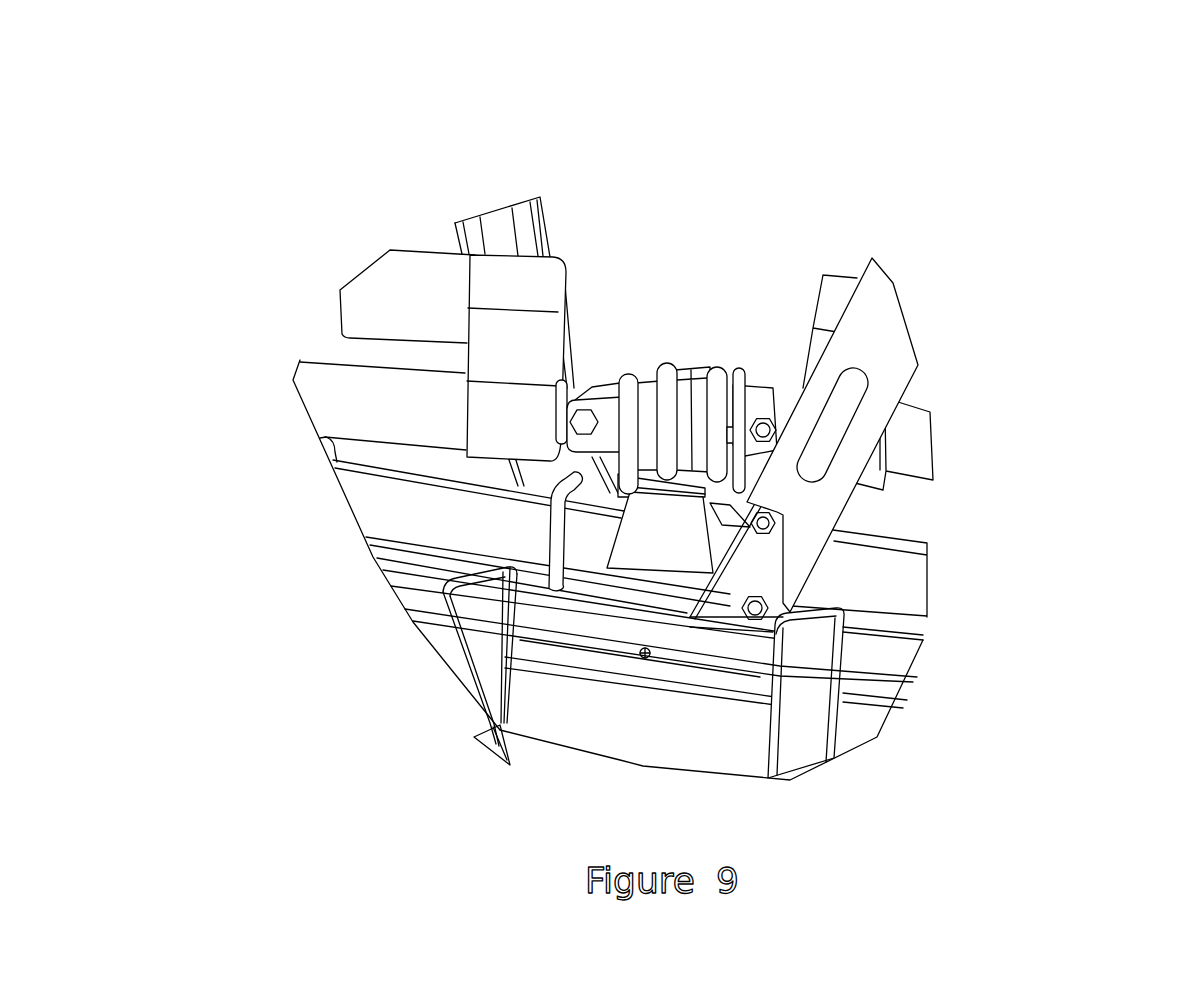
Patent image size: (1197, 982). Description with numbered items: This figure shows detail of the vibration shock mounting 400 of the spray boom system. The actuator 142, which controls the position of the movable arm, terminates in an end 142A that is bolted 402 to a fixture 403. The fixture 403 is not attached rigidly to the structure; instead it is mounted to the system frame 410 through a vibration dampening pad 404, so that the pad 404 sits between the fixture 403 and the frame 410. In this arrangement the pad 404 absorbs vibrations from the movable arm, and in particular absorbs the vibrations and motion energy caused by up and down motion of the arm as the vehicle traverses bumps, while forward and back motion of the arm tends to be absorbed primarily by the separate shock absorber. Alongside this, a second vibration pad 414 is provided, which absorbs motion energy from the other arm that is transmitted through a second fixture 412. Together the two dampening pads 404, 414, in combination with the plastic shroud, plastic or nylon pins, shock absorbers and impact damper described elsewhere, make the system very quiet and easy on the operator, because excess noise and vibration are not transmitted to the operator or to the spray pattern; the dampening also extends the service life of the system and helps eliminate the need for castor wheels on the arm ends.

The vibration shock mounting 400 is at (977, 195).
The actuator 142 is at (365, 290).
The end of actuator 142A is at (490, 366).
The bolt 402 is at (578, 427).
The fixture 403 is at (608, 380).
The vibration dampening pad 404 is at (660, 360).
The second vibration pad 414 is at (715, 366).
The fixture 412 is at (745, 368).
The frame 410 is at (913, 590).